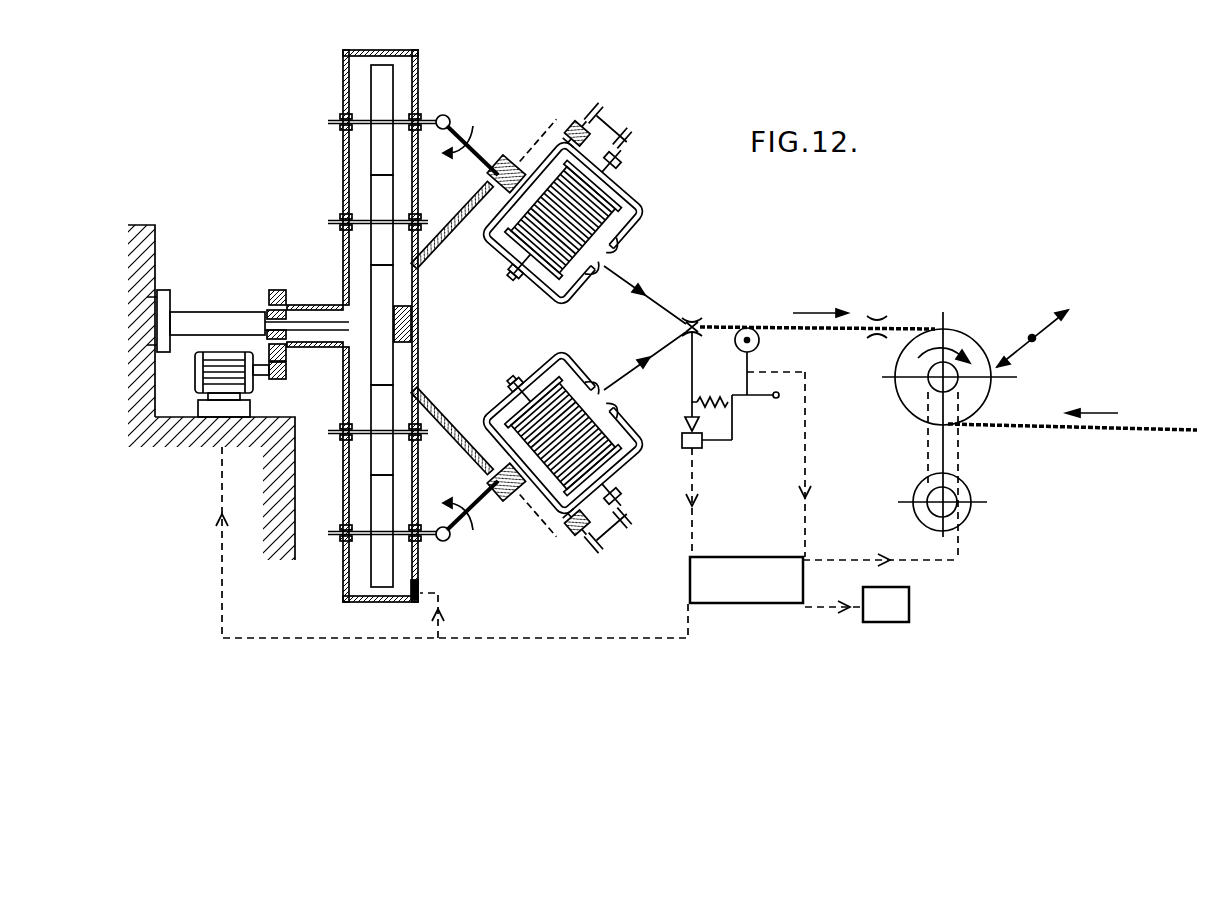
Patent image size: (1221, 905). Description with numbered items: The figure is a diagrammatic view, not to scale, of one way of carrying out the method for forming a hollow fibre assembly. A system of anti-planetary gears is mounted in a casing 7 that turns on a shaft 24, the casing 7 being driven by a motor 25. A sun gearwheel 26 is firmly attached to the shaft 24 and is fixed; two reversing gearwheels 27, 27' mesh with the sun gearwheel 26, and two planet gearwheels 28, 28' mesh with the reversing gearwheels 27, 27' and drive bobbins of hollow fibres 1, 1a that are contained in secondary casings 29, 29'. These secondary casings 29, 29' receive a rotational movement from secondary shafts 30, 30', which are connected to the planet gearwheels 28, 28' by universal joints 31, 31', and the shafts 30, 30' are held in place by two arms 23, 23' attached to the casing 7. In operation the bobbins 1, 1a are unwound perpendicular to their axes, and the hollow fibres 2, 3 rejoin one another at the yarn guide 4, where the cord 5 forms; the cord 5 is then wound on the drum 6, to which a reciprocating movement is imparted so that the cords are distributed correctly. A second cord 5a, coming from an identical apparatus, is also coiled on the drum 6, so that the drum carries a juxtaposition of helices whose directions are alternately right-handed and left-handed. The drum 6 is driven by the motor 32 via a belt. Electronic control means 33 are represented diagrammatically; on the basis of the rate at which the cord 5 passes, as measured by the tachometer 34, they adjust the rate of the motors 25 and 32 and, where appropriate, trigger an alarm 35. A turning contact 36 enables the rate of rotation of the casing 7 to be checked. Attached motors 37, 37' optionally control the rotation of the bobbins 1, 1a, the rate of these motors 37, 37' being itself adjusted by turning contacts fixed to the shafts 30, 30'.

The bobbin of hollow fibres 1 is at (596, 223).
The bobbin of hollow fibres 1a is at (587, 428).
The hollow fibre 2 is at (661, 300).
The hollow fibre 3 is at (643, 361).
The yarn guide 4 is at (698, 316).
The cord 5 is at (722, 323).
The second cord 5a is at (1101, 429).
The drum 6 is at (968, 338).
The casing 7 is at (418, 62).
The arm 23 is at (488, 188).
The arm 23' is at (488, 467).
The shaft 24 is at (243, 317).
The motor 25 is at (228, 363).
The sun gearwheel 26 is at (380, 296).
The reversing gearwheel 27 is at (347, 215).
The reversing gearwheel 27' is at (347, 432).
The planet gearwheel 28 is at (345, 120).
The planet gearwheel 28' is at (344, 531).
The secondary casing 29 is at (582, 224).
The secondary casing 29' is at (576, 432).
The secondary shaft 30 is at (480, 133).
The secondary shaft 30' is at (482, 525).
The universal joint 31 is at (454, 97).
The universal joint 31' is at (455, 560).
The motor 32 is at (961, 516).
The electronic control means 33 is at (741, 594).
The tachometer 34 is at (760, 342).
The alarm 35 is at (894, 599).
The turning contact 36 is at (414, 606).
The attached motor 37 is at (567, 107).
The attached motor 37' is at (575, 549).